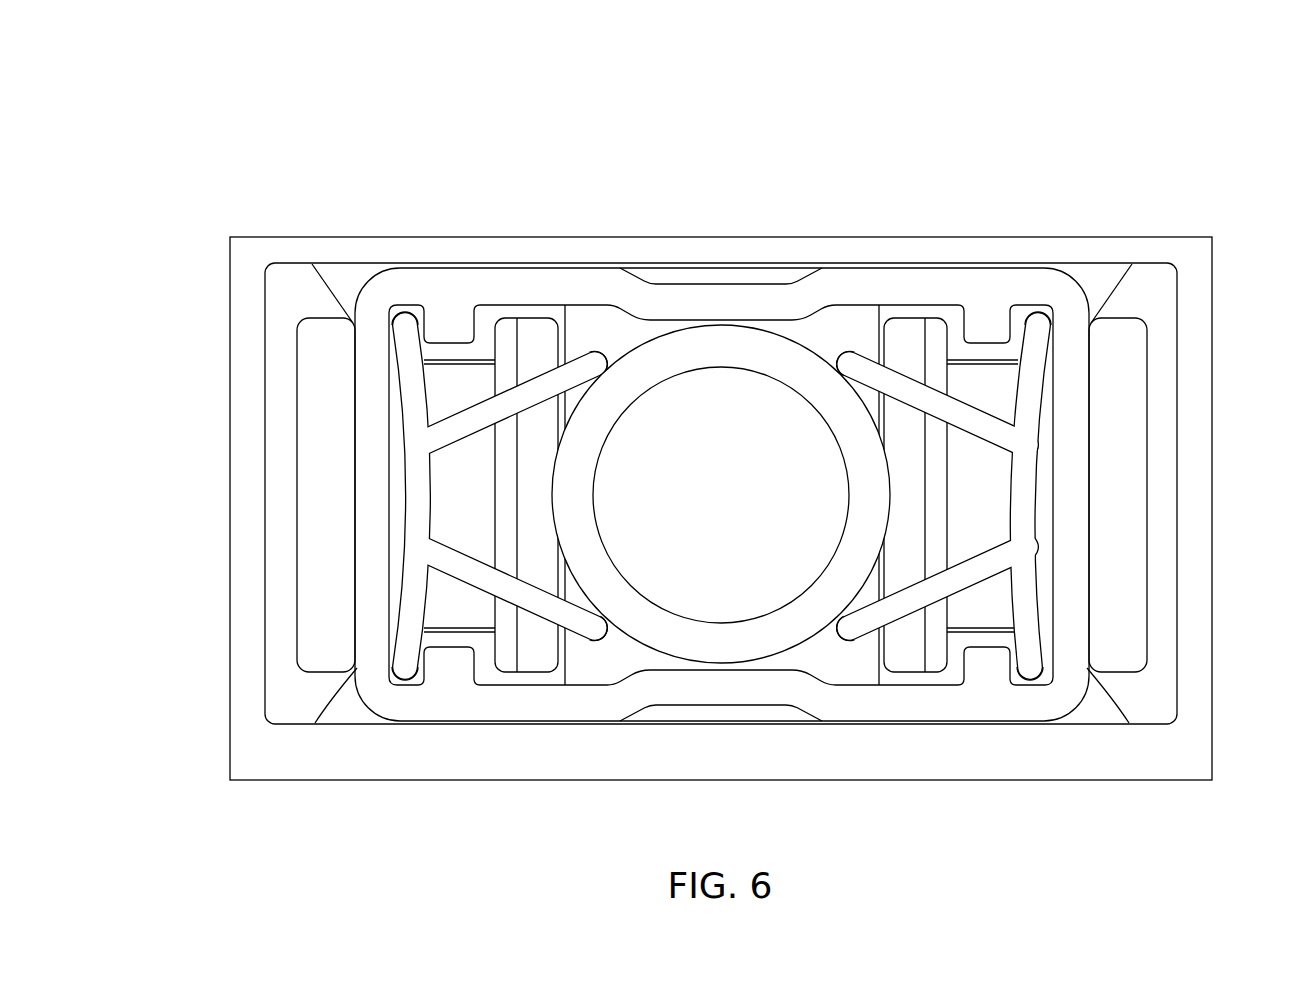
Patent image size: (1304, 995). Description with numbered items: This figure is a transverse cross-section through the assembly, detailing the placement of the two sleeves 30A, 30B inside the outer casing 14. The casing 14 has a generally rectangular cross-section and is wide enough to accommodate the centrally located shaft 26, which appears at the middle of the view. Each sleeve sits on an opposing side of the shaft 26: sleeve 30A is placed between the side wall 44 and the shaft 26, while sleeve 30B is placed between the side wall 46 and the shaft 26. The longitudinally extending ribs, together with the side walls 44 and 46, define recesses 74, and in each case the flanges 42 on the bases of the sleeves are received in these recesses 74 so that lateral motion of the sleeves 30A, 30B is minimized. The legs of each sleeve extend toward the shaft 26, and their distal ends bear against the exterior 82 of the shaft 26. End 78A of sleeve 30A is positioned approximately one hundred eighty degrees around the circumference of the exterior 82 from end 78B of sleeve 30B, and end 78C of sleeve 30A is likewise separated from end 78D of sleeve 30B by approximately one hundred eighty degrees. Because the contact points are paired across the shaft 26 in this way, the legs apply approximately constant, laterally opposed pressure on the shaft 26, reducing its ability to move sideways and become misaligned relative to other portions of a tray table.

The outer casing 14 is at (779, 143).
The shaft 26 is at (780, 365).
The sleeve 30A is at (378, 515).
The sleeve 30B is at (1067, 515).
The flanges 42 is at (406, 336).
The side wall 44 is at (375, 540).
The side wall 46 is at (1070, 545).
The recesses 74 is at (420, 316).
The distal end 78A is at (607, 356).
The distal end 78B is at (851, 630).
The distal end 78C is at (595, 630).
The distal end 78D is at (847, 360).
The exterior 82 is at (655, 320).